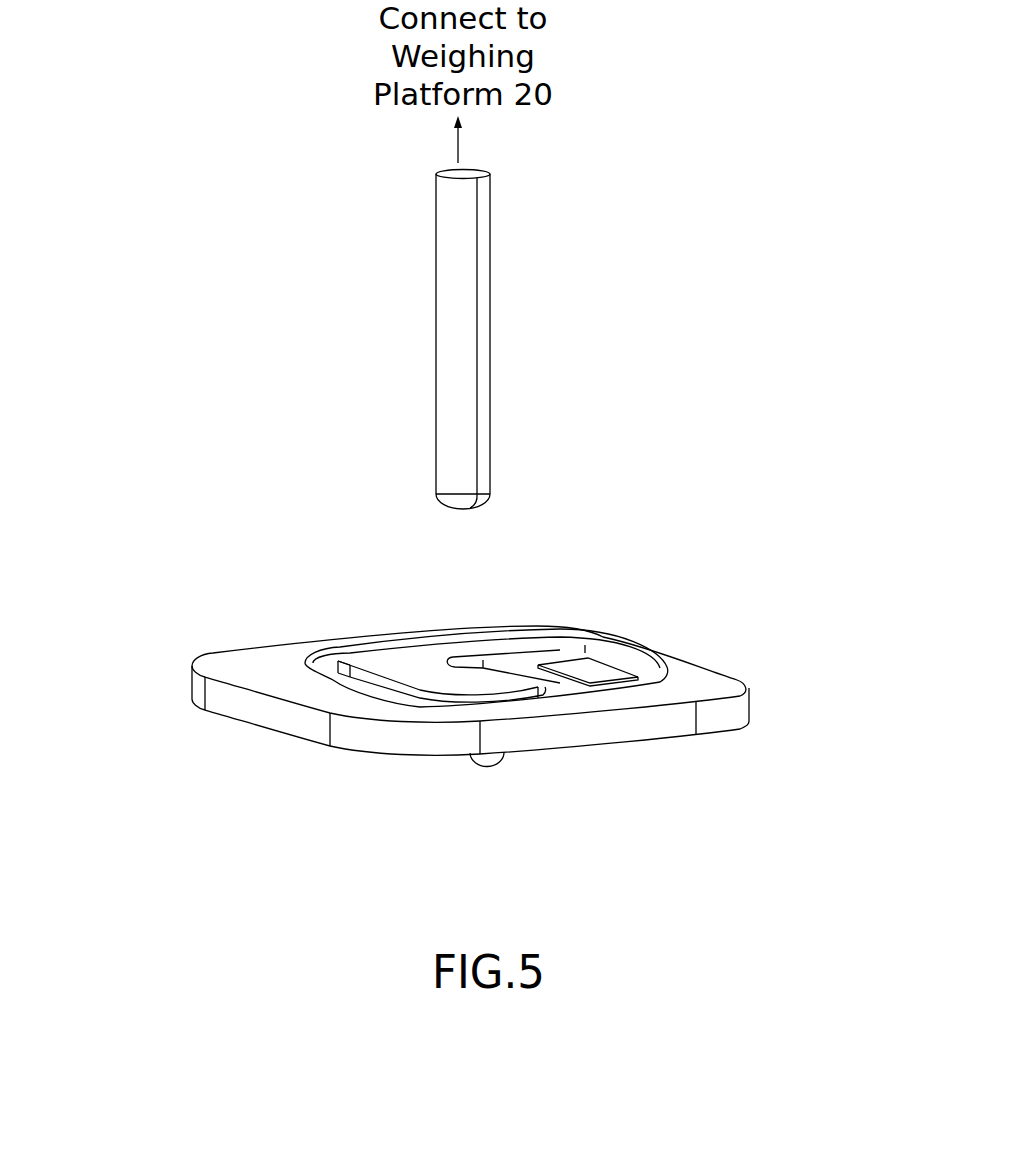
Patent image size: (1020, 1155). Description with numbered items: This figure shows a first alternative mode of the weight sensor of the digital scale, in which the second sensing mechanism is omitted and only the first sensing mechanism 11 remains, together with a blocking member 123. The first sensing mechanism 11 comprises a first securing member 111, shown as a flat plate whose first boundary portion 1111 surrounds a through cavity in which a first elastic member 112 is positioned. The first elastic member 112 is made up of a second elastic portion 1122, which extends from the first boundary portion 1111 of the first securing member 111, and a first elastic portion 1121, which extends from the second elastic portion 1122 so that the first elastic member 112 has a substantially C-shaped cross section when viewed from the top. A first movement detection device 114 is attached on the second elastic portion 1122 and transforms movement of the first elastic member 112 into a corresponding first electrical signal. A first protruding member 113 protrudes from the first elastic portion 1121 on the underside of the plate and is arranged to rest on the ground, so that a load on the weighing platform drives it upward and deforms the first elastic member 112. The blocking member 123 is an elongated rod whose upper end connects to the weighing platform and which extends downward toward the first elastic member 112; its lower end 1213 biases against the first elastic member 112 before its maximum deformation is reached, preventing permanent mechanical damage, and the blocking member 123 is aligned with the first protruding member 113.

The first sensing mechanism 11 is at (176, 646).
The first securing member 111 is at (645, 722).
The first boundary portion 1111 is at (720, 686).
The first elastic member 112 is at (380, 662).
The first elastic portion 1121 is at (428, 677).
The second elastic portion 1122 is at (528, 657).
The first protruding member 113 is at (490, 763).
The first movement detection device 114 is at (592, 668).
The blocking member 123 is at (447, 264).
The rod end 1213 is at (468, 511).